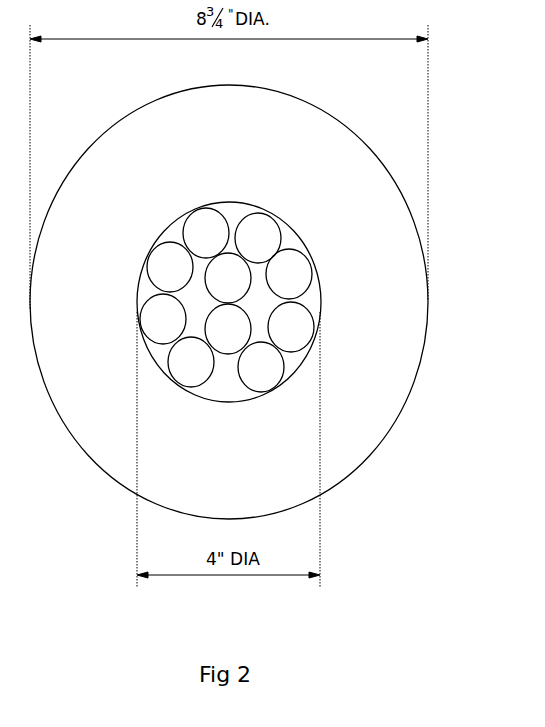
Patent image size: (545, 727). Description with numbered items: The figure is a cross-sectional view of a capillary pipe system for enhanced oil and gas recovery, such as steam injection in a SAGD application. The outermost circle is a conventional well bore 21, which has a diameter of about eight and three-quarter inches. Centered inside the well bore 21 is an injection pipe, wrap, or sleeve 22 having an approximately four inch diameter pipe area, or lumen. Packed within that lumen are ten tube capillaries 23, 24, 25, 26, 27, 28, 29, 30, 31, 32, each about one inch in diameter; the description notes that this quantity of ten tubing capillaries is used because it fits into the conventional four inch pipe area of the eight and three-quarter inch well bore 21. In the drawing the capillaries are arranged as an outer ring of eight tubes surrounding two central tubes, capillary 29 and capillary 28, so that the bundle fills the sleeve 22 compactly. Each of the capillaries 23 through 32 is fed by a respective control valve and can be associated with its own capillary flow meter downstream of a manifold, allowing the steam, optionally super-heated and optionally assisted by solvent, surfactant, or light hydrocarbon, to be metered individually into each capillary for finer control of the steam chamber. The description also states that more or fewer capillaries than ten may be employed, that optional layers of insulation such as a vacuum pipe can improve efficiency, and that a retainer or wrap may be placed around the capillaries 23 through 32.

The well bore 21 is at (268, 302).
The injection pipe, wrap, or sleeve 22 is at (247, 290).
The capillary 23 is at (206, 233).
The capillary 24 is at (258, 238).
The capillary 25 is at (289, 274).
The capillary 26 is at (291, 327).
The capillary 27 is at (261, 367).
The capillary 28 is at (228, 329).
The capillary 29 is at (228, 278).
The capillary 30 is at (191, 362).
The capillary 31 is at (163, 319).
The capillary 32 is at (170, 267).